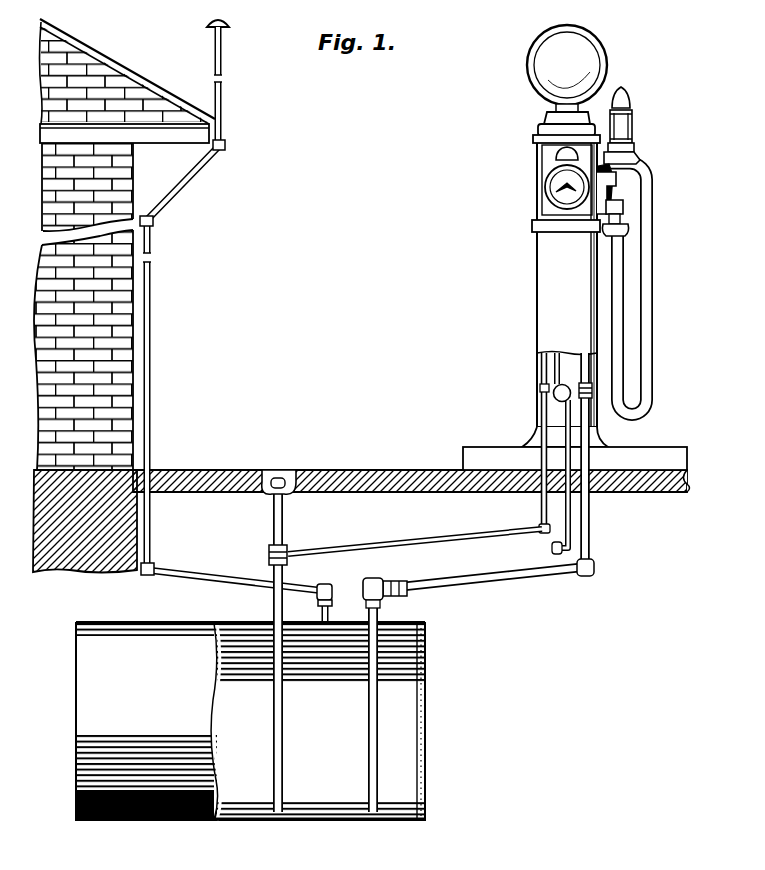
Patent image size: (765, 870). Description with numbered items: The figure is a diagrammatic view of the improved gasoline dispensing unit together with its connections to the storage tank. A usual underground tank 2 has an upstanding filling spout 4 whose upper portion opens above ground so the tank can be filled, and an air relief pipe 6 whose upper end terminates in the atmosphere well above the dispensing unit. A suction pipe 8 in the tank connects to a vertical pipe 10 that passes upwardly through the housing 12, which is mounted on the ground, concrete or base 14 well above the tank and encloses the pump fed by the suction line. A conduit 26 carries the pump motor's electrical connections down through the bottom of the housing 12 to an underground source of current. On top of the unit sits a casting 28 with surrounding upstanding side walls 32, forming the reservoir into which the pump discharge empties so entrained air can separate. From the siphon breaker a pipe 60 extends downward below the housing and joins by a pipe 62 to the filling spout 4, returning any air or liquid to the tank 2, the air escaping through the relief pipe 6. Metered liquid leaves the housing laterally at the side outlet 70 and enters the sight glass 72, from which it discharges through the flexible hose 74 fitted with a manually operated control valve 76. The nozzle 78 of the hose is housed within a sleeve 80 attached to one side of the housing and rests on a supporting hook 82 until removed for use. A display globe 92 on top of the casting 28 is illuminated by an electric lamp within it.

The underground tank 2 is at (75, 733).
The filling spout 4 is at (285, 524).
The air relief pipe 6 is at (188, 572).
The suction pipe 8 is at (377, 677).
The vertical pipe 10 is at (590, 517).
The housing 12 is at (537, 298).
The base 14 is at (688, 481).
The conduit 26 is at (566, 410).
The casting 28 is at (598, 128).
The upstanding side walls 32 is at (560, 115).
The pipe 60 is at (540, 372).
The pipe 62 is at (408, 542).
The side outlet 70 is at (640, 160).
The sight glass 72 is at (634, 139).
The flexible hose 74 is at (653, 285).
The control valve 76 is at (622, 211).
The nozzle 78 is at (613, 186).
The sleeve 80 is at (607, 174).
The supporting hook 82 is at (622, 229).
The display globe 92 is at (596, 38).